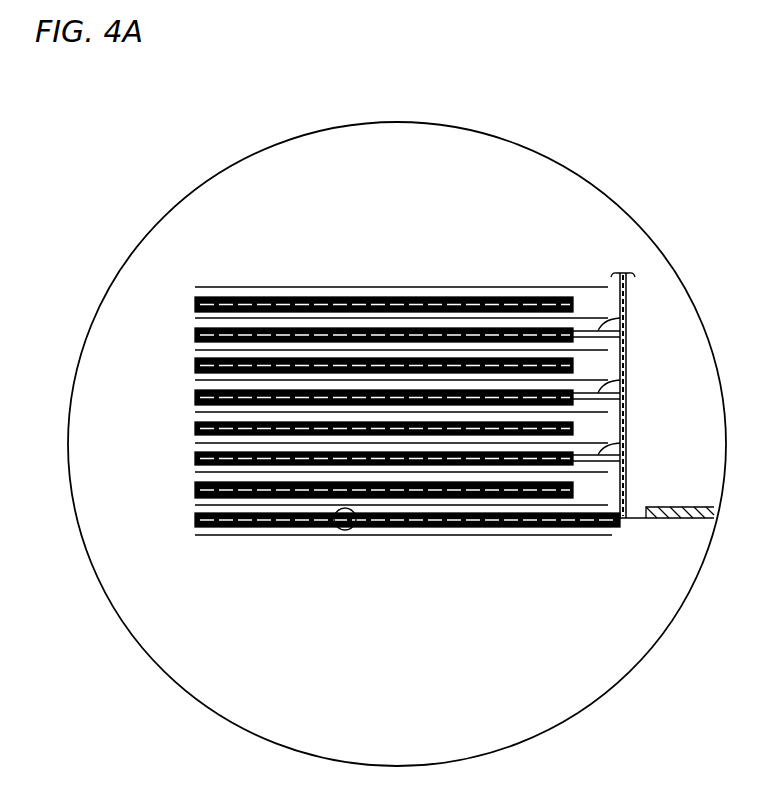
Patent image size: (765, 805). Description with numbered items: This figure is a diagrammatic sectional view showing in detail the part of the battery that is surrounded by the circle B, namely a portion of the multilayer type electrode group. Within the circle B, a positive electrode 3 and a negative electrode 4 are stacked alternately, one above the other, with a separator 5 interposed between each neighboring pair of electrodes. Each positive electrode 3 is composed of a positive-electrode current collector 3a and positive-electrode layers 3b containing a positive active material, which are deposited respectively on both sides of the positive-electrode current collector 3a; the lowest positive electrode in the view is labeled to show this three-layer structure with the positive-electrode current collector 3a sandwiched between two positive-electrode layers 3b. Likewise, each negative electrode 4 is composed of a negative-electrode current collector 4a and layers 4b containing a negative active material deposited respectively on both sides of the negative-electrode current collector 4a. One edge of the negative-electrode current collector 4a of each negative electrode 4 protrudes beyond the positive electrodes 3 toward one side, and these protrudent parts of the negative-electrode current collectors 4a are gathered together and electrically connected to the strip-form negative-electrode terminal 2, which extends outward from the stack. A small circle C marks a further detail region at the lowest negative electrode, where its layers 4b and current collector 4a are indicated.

The negative-electrode terminal 2 is at (686, 505).
The positive electrode 3 is at (193, 305).
The positive-electrode current collector 3a is at (196, 490).
The positive-electrode layer 3b is at (196, 483).
The negative electrode 4 is at (193, 336).
The negative-electrode current collector 4a is at (626, 318).
The negative active material layer 4b is at (196, 515).
The separator 5 is at (455, 286).
The circle B is at (626, 675).
The detail region C is at (345, 531).